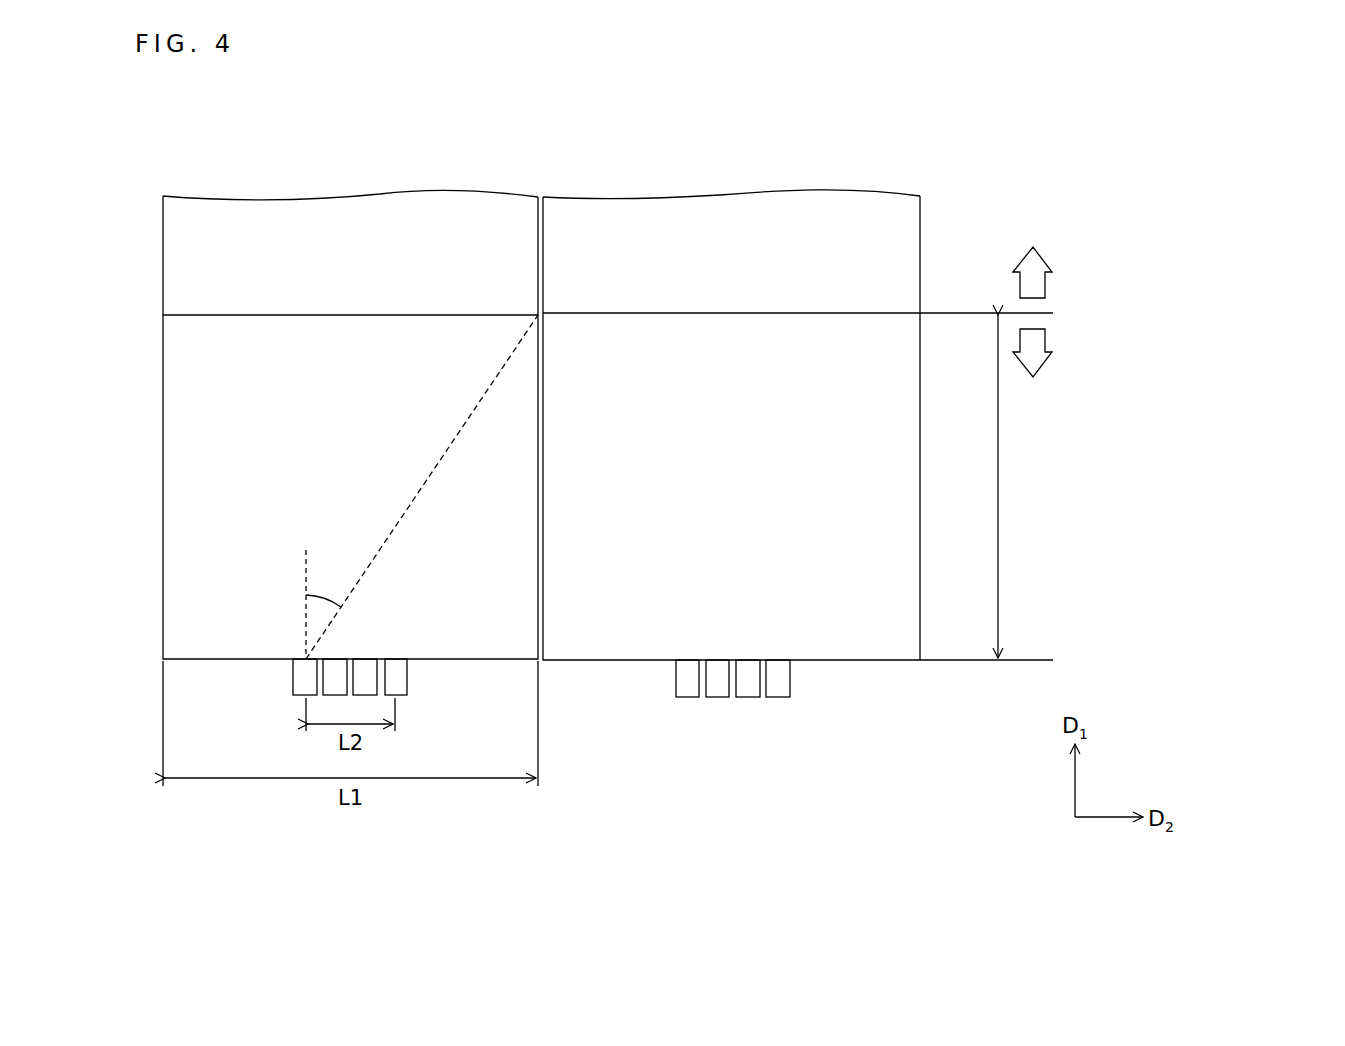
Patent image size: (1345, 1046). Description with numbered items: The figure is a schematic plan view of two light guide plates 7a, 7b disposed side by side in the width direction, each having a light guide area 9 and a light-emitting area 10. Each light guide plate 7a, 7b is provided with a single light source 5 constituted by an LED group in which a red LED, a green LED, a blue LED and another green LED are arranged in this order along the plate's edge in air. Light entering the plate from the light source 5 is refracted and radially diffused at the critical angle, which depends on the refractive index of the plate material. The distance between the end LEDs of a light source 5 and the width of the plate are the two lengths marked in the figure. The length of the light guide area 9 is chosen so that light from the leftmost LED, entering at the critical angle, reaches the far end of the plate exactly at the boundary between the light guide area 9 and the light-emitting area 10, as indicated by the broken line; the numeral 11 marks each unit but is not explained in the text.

The light emitting unit 11 is at (243, 170).
The light guide plate 7a is at (350, 487).
The light guide plate 7b is at (731, 482).
The light source 5 is at (422, 692).
The light-emitting area 10 is at (1153, 272).
The light guide area 9 is at (1101, 486).